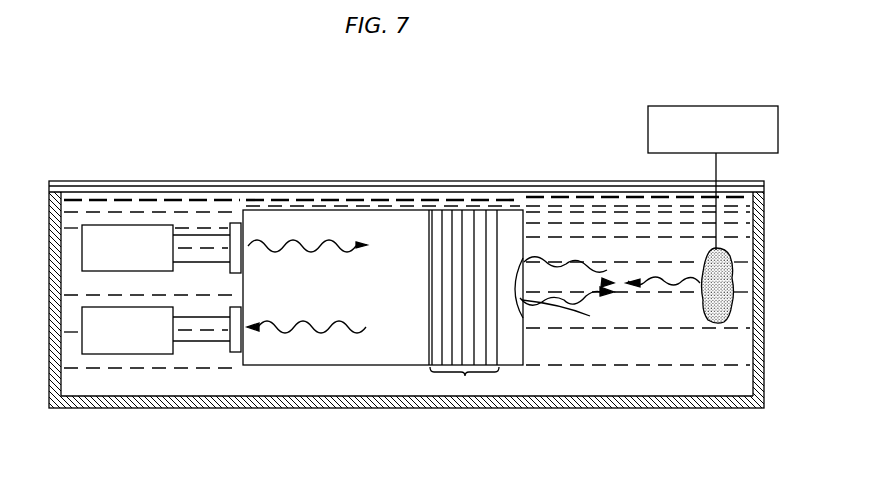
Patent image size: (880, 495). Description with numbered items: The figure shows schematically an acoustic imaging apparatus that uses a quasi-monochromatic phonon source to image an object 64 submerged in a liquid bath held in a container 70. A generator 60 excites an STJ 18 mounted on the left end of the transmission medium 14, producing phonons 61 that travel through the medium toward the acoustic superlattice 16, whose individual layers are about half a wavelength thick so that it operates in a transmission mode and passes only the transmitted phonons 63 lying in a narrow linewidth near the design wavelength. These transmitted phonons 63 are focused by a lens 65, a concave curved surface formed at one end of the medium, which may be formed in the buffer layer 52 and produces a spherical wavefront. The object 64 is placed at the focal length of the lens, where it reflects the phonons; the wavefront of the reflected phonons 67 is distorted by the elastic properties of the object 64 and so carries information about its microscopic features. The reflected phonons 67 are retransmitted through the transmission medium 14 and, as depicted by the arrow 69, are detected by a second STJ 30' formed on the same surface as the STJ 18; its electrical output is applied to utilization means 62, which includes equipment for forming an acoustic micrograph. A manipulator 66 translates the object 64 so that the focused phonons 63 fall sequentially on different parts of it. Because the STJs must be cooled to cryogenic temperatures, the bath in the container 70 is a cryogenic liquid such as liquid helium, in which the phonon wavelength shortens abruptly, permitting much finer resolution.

The transmission medium 14 is at (386, 366).
The acoustic superlattice 16 is at (480, 393).
The STJ 18 is at (236, 226).
The STJ 30' is at (223, 369).
The buffer layer 52 is at (513, 223).
The generator 60 is at (150, 225).
The phonons 61 is at (308, 222).
The utilization means 62 is at (120, 355).
The transmitted phonons 63 is at (574, 257).
The object 64 is at (727, 320).
The lens 65 is at (567, 289).
The manipulator 66 is at (648, 126).
The reflected phonons 67 is at (682, 284).
The arrow 69 is at (306, 324).
The container 70 is at (610, 397).